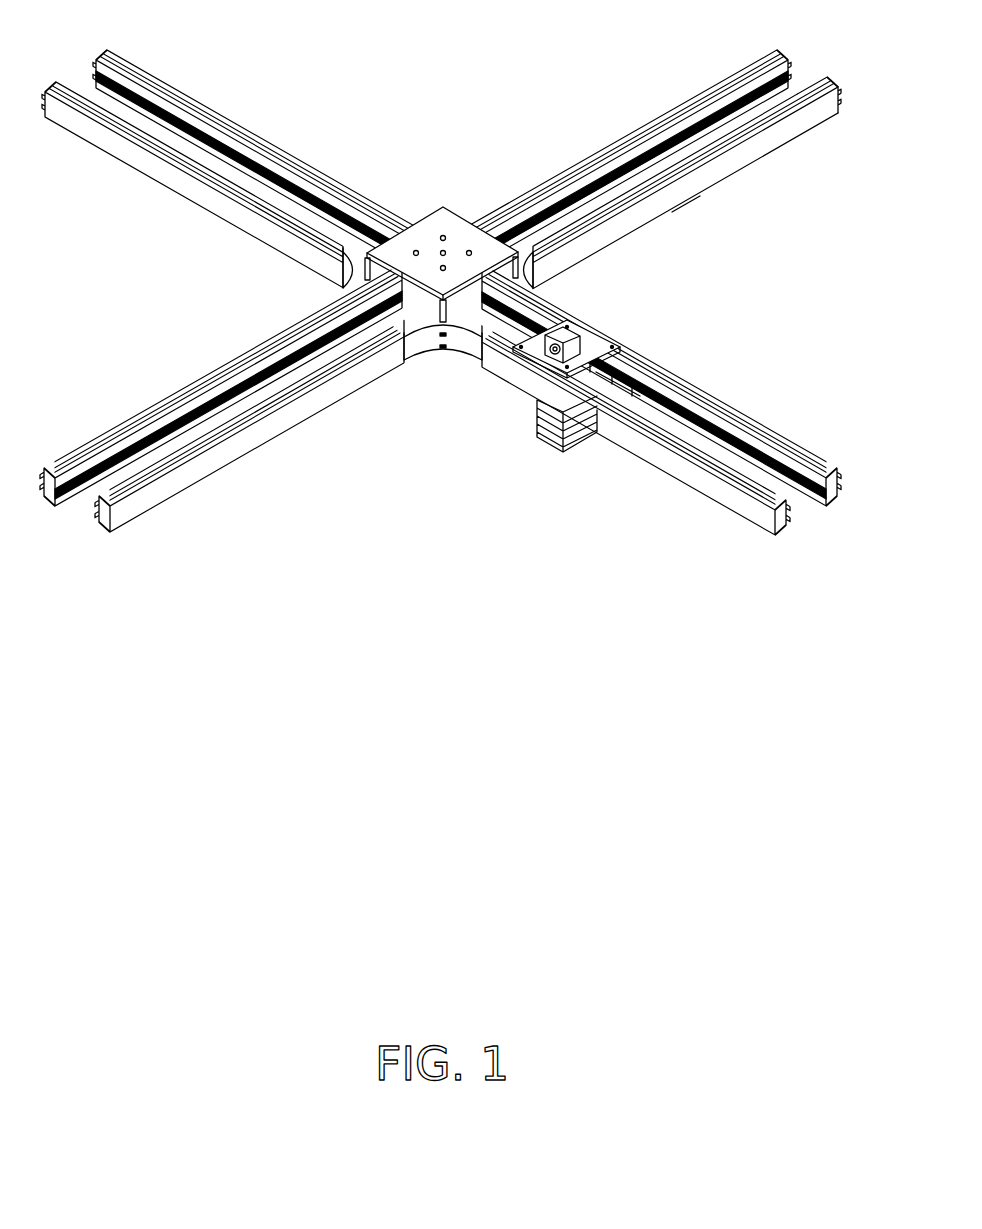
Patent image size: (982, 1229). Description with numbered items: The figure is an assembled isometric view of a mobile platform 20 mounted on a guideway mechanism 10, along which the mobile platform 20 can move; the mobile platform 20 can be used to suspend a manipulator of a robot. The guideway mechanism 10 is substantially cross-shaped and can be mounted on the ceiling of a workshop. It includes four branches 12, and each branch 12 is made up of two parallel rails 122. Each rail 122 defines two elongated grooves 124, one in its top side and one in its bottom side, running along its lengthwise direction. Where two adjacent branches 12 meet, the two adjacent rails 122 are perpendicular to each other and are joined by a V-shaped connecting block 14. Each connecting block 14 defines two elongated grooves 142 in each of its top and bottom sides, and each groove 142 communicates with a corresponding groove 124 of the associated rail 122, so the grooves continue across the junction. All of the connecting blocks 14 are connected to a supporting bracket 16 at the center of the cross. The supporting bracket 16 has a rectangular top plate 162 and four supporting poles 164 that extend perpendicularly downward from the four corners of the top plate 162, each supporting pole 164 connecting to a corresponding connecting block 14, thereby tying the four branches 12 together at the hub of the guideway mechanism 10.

The guideway mechanism 10 is at (446, 283).
The branch 12 is at (443, 290).
The rail 122 is at (688, 192).
The elongated groove 124 is at (819, 86).
The connecting block 14 is at (438, 351).
The elongated groove 142 is at (463, 347).
The supporting bracket 16 is at (465, 204).
The top plate 162 is at (442, 219).
The supporting pole 164 is at (525, 248).
The mobile platform 20 is at (612, 345).